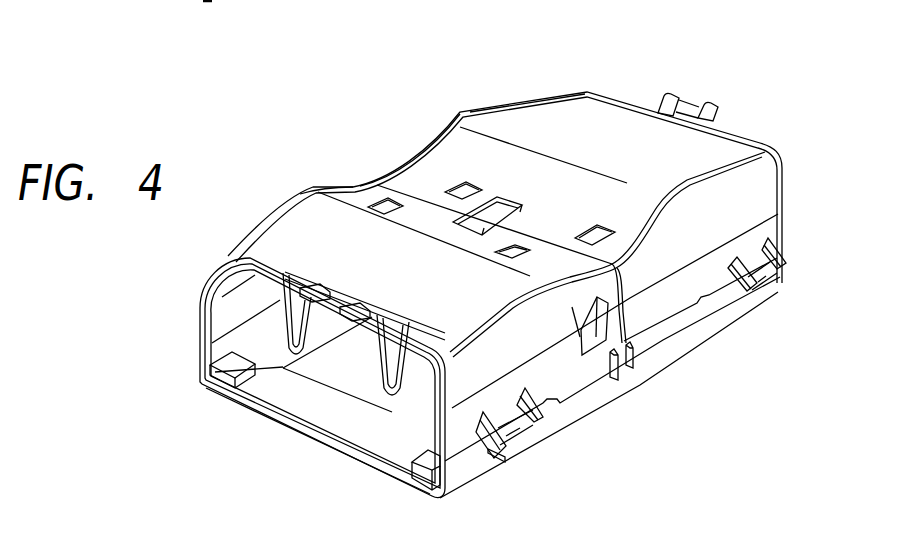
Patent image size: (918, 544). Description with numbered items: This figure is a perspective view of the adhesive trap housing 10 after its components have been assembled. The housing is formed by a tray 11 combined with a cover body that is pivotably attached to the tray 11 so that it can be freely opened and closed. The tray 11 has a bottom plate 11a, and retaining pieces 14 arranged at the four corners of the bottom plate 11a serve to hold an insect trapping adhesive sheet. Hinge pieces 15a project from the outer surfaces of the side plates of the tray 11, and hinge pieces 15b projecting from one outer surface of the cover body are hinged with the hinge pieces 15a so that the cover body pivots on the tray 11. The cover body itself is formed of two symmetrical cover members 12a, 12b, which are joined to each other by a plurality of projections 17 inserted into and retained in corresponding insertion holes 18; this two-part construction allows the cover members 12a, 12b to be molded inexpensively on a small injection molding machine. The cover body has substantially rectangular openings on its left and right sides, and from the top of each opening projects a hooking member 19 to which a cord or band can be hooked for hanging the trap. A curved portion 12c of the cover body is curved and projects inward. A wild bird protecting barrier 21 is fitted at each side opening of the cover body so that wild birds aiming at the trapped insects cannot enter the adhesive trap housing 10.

The adhesive trap housing 10 is at (363, 170).
The tray 11 is at (310, 438).
The bottom plate 11a is at (282, 403).
The cover member 12a is at (303, 190).
The cover member 12b is at (543, 117).
The curved portion 12c is at (428, 143).
The retaining pieces 14 is at (222, 380).
The hinge pieces 15a is at (774, 284).
The hinge pieces 15b is at (777, 243).
The projections 17 is at (497, 213).
The insertion holes 18 is at (590, 235).
The hooking members 19 is at (303, 277).
The wild bird protecting barrier 21 is at (367, 390).